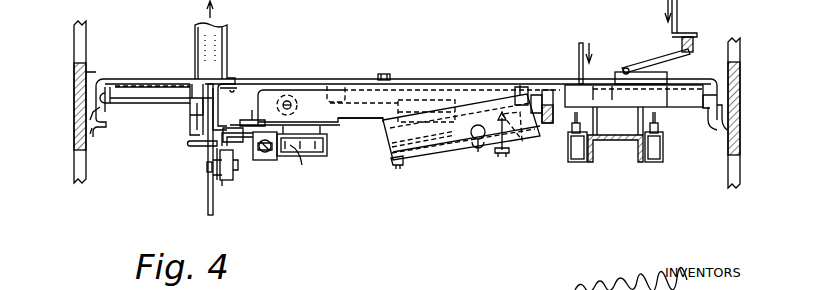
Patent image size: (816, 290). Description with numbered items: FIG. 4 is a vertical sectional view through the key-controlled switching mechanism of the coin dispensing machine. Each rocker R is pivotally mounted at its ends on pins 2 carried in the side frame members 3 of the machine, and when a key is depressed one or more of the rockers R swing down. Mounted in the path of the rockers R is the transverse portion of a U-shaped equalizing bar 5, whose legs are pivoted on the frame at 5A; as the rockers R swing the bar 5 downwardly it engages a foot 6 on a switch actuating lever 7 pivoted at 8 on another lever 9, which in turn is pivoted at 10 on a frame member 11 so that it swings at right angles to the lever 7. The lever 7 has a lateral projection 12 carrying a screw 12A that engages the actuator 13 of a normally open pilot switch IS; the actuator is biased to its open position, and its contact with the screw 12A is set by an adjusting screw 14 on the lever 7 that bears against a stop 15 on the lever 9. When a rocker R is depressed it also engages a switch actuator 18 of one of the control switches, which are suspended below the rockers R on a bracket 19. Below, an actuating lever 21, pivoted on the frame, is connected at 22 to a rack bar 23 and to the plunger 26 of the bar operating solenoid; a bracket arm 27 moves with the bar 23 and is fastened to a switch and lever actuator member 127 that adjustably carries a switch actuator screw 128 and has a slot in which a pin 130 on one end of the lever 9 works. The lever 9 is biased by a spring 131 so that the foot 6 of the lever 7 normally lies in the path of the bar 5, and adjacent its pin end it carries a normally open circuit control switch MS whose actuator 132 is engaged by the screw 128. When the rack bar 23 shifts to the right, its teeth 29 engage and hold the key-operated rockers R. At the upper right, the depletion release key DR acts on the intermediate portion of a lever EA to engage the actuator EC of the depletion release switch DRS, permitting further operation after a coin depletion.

The side frame member 3 is at (92, 77).
The pin 2 is at (100, 132).
The rocker R is at (104, 112).
The plunger 26 is at (207, 67).
The actuating lever 21 is at (208, 208).
The teeth 29 is at (198, 146).
The pivotal connection 22 is at (207, 168).
The rack bar 23 is at (217, 172).
The bracket arm 27 is at (222, 182).
The pin 130 is at (251, 120).
The spring 131 is at (290, 95).
The pivot 5A is at (342, 88).
The pivot 10 is at (385, 76).
The frame member 11 is at (433, 84).
The pilot switch IS is at (430, 110).
The lever 9 is at (375, 115).
The actuator 13 is at (383, 147).
The circuit control switch MS is at (313, 153).
The switch and lever actuator member 127 is at (253, 145).
The switch actuator screw 128 is at (276, 150).
The actuator 132 is at (290, 147).
The switch actuating lever 7 is at (438, 145).
The lateral projection 12 is at (452, 146).
The screw 12A is at (394, 168).
The pivot 8 is at (478, 140).
The adjusting screw 14 is at (503, 153).
The stop 15 is at (510, 118).
The foot 6 is at (536, 95).
The equalizing bar 5 is at (547, 92).
The switch actuator 18 is at (577, 124).
The bracket 19 is at (612, 138).
The depletion release switch DRS is at (665, 80).
The actuator EC is at (652, 62).
The lever EA is at (693, 52).
The depletion release key DR is at (680, 18).